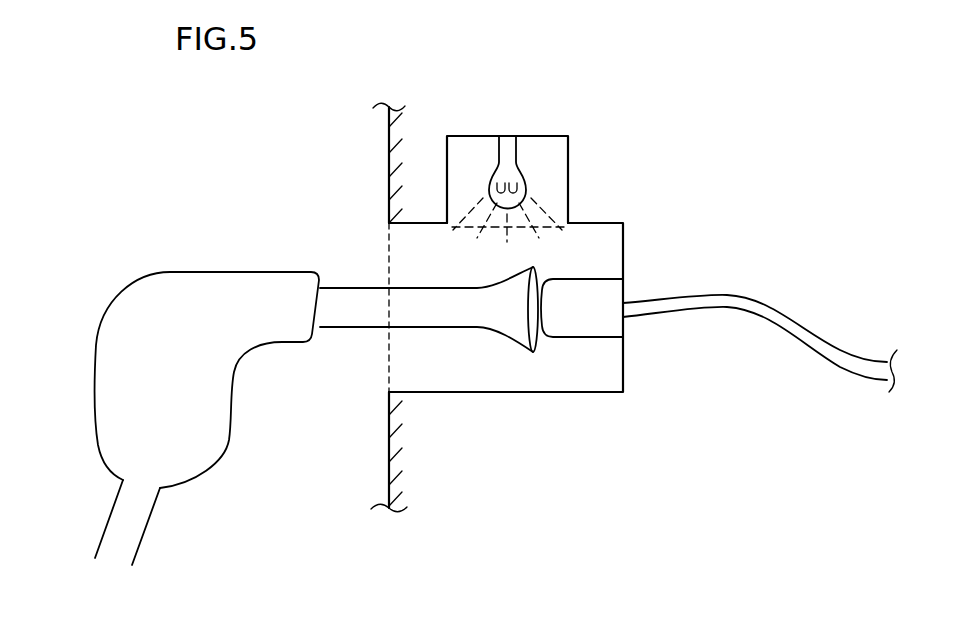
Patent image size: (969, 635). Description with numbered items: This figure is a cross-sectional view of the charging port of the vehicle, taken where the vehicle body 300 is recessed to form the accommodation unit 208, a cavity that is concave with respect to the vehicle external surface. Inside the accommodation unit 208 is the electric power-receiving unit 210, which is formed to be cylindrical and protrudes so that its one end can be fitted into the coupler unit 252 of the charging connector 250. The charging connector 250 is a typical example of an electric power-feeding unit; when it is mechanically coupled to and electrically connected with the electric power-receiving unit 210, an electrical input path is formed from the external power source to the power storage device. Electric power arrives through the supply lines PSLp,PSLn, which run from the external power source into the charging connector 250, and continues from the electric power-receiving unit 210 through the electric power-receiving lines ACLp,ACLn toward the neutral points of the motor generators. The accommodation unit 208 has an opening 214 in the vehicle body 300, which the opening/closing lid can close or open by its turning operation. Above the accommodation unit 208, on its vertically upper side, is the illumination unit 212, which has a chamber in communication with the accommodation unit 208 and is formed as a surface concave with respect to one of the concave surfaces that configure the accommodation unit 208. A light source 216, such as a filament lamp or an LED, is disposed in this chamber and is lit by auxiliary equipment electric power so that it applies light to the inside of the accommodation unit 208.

The vehicle body 300 is at (412, 112).
The accommodation unit 208 is at (642, 222).
The illumination unit 212 is at (555, 113).
The light source 216 is at (524, 178).
The opening 214 is at (371, 370).
The electric power-receiving unit 210 is at (585, 292).
The coupler unit 252 is at (358, 300).
The charging connector 250 is at (110, 374).
The supply lines PSLp,PSLn is at (160, 543).
The electric power-receiving lines ACLp,ACLn is at (765, 281).